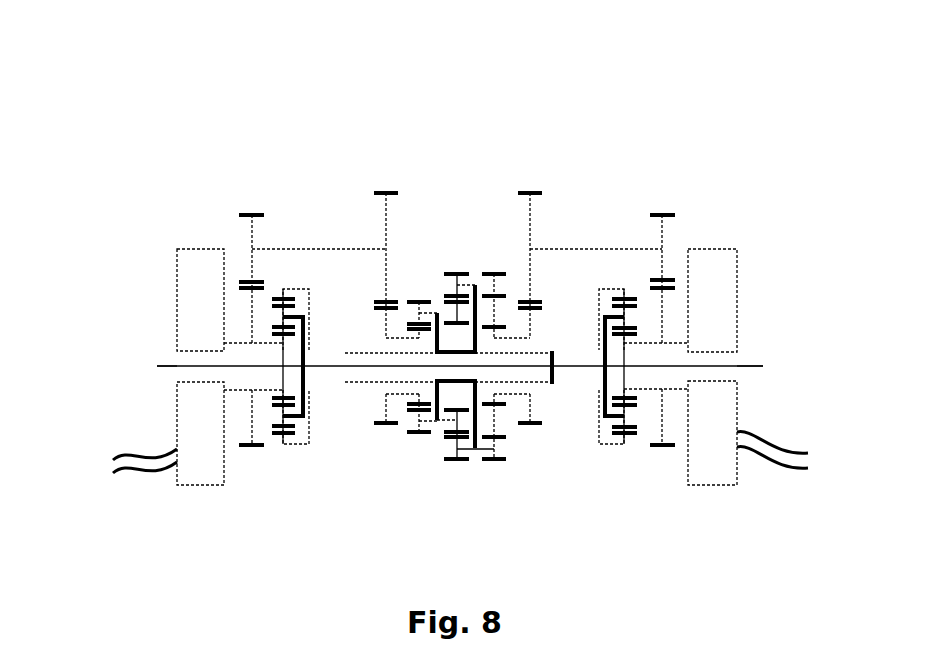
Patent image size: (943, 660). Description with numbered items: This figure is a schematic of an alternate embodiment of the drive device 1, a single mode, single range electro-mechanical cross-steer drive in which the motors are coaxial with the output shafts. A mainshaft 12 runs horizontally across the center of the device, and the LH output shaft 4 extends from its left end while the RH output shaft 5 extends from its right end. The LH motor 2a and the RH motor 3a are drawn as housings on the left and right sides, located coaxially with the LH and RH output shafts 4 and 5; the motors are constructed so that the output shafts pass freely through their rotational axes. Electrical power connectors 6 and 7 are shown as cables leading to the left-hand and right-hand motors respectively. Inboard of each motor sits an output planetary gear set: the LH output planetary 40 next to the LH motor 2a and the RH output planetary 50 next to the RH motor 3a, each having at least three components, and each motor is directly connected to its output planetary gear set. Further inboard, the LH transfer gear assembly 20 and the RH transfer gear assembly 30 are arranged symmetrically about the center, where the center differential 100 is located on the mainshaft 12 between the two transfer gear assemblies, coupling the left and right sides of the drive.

The drive device 1 is at (106, 49).
The LH motor 2a is at (203, 249).
The RH motor 3a is at (720, 249).
The LH output shaft 4 is at (157, 367).
The RH output shaft 5 is at (744, 367).
The electrical power connector 6 is at (158, 466).
The electrical power connector 7 is at (765, 452).
The mainshaft 12 is at (573, 367).
The LH transfer gear assembly 20 is at (387, 184).
The RH transfer gear assembly 30 is at (530, 184).
The LH output planetary gear set 40 is at (295, 456).
The RH output planetary gear set 50 is at (612, 456).
The center differential 100 is at (454, 468).